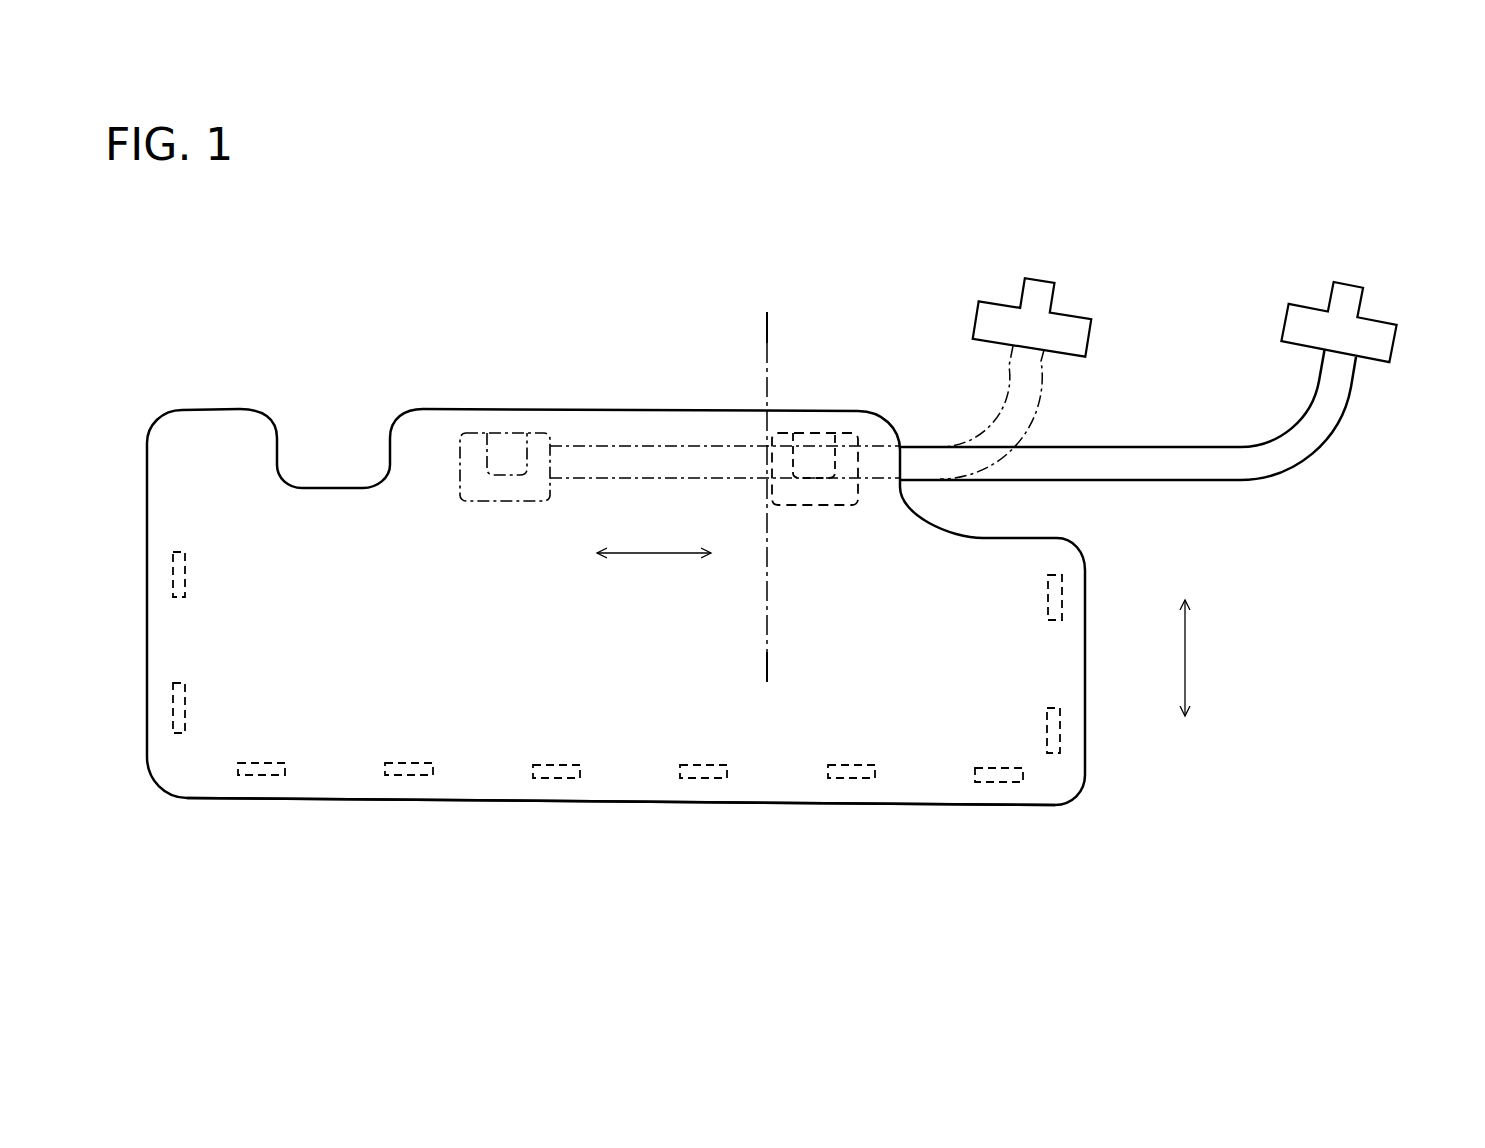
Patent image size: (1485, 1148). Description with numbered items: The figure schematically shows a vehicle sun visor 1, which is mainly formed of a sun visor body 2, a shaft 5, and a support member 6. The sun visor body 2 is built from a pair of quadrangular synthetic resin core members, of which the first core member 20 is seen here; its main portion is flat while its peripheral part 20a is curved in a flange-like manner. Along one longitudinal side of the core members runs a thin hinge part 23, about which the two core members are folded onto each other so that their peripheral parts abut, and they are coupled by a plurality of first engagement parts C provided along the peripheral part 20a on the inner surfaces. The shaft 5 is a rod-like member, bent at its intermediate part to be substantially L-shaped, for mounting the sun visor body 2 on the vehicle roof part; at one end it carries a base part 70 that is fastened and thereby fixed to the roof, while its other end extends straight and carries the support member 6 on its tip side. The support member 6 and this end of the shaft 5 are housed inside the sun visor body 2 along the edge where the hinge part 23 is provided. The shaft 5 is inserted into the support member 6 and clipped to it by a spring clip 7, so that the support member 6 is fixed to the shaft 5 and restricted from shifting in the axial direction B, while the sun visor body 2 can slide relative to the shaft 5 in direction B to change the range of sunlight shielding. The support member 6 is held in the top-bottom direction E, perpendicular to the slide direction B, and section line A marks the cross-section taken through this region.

The vehicle sun visor 1 is at (1152, 337).
The sun visor body 2 is at (467, 393).
The first core member 20 is at (633, 728).
The peripheral part 20a is at (785, 802).
The hinge part 23 is at (537, 412).
The shaft 5 is at (1133, 450).
The support member 6 is at (860, 440).
The spring clip 7 is at (815, 445).
The base part 70 is at (1395, 358).
The section line A- A is at (764, 323).
The direction B is at (654, 537).
The first engagement parts C is at (170, 570).
The direction E is at (1199, 658).